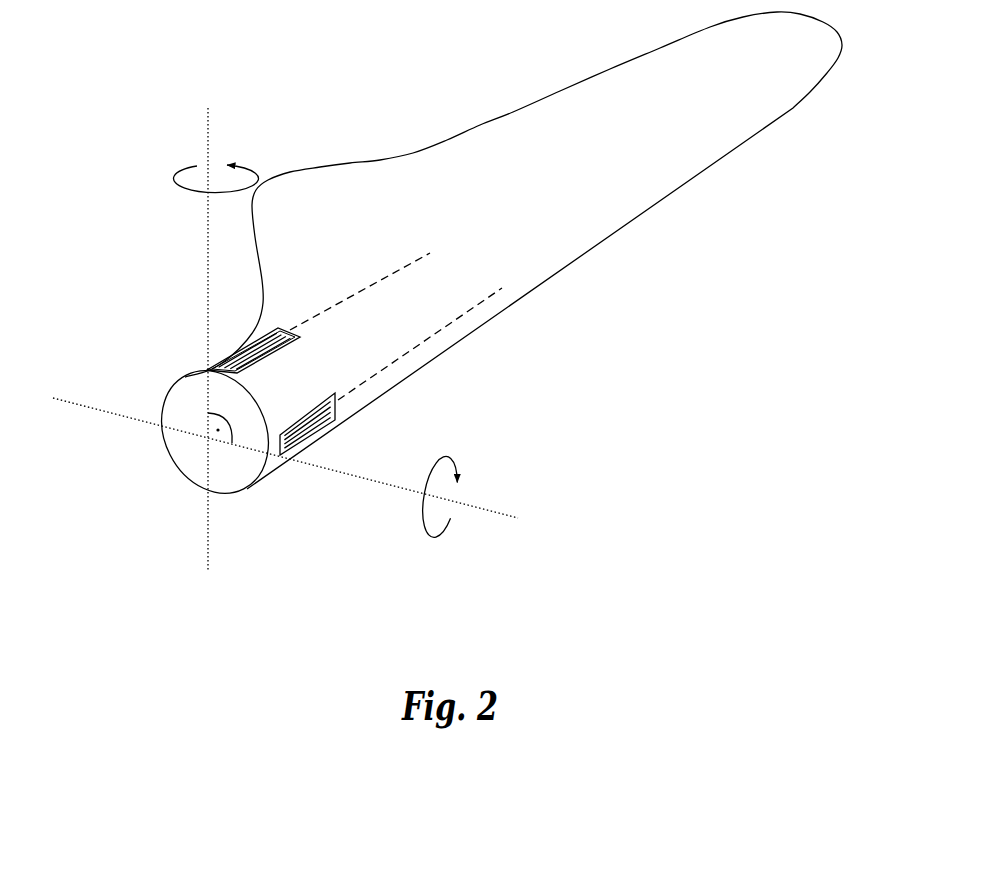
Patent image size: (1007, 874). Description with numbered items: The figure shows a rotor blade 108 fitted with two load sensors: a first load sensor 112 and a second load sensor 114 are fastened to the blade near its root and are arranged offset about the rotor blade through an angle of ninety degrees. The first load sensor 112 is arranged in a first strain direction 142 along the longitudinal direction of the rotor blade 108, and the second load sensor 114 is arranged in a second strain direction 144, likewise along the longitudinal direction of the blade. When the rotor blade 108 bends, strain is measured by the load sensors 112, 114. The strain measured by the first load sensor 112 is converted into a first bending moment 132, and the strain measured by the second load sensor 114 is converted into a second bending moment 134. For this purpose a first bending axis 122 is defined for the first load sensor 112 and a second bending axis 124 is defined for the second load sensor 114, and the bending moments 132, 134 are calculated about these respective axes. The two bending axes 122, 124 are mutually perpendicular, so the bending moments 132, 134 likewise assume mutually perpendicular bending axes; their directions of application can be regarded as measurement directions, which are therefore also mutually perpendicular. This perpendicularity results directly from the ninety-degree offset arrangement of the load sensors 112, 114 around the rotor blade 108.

The rotor blade 108 is at (602, 193).
The first load sensor 112 is at (286, 348).
The second load sensor 114 is at (315, 439).
The first bending axis 122 is at (92, 405).
The second bending axis 124 is at (201, 537).
The first bending moment 132 is at (448, 544).
The second bending moment 134 is at (249, 163).
The first strain direction 142 is at (431, 248).
The second strain direction 144 is at (480, 312).